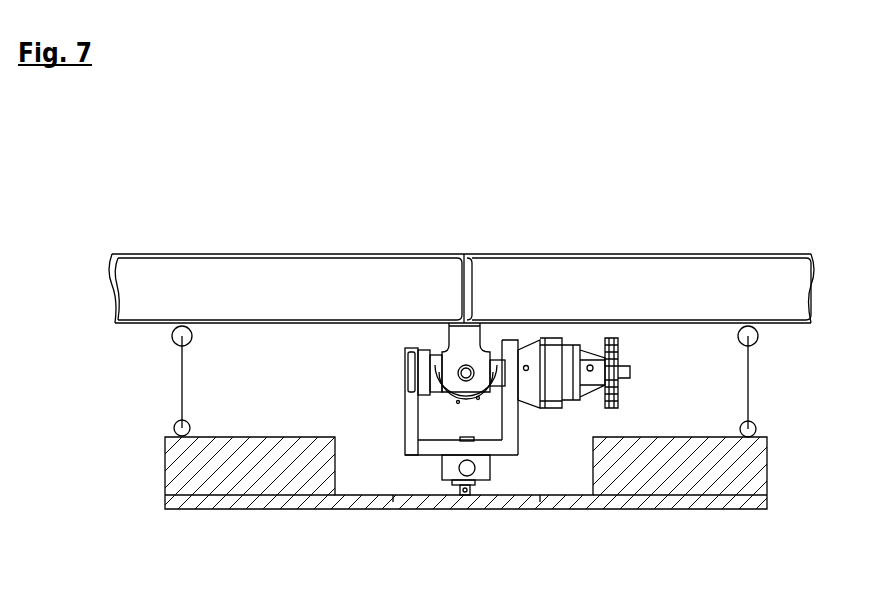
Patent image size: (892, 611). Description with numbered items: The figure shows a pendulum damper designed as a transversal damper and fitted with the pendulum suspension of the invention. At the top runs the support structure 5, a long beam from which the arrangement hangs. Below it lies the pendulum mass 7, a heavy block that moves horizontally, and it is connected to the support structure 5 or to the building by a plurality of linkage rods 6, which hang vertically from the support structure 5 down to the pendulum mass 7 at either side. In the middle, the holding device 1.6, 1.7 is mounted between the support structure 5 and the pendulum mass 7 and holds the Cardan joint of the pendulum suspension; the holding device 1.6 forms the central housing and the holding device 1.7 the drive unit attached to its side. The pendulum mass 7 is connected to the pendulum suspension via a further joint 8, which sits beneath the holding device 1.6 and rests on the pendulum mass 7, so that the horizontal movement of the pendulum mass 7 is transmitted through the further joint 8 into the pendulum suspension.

The support structure 5 is at (175, 266).
The holding device 1.6 is at (460, 333).
The holding device 1.7 is at (408, 430).
The linkage rods 6 is at (178, 395).
The pendulum mass 7 is at (183, 477).
The further joint 8 is at (470, 470).